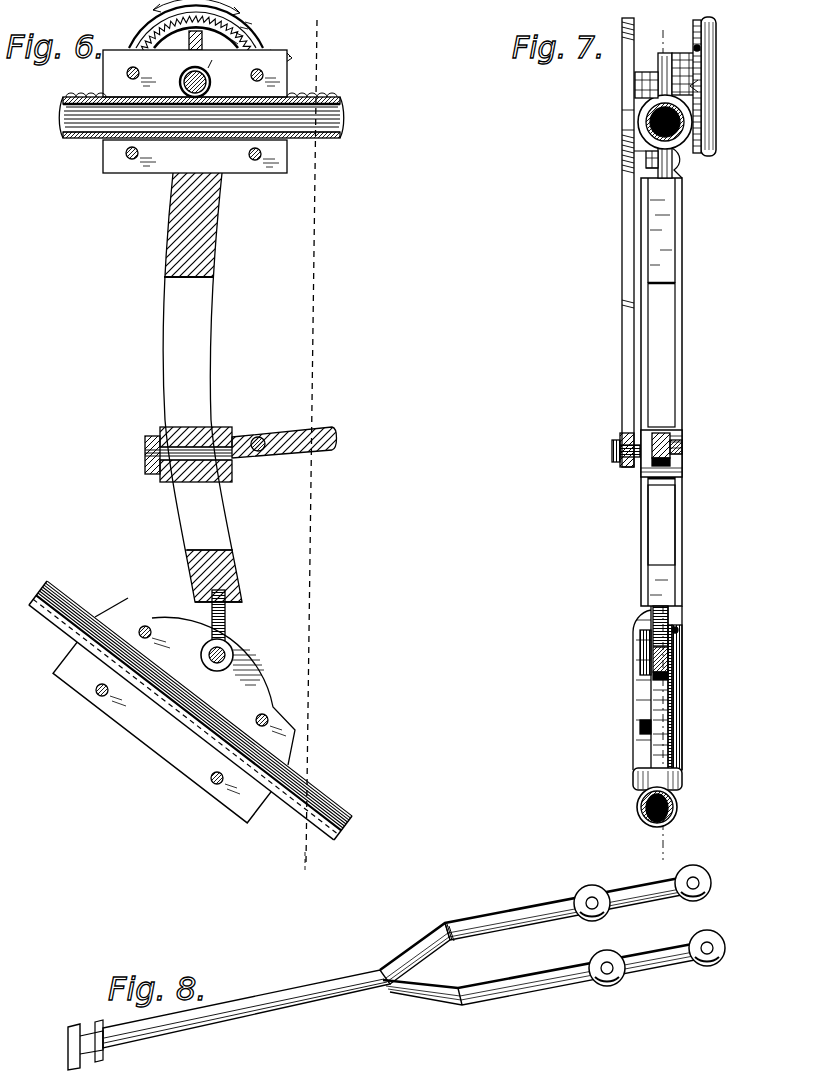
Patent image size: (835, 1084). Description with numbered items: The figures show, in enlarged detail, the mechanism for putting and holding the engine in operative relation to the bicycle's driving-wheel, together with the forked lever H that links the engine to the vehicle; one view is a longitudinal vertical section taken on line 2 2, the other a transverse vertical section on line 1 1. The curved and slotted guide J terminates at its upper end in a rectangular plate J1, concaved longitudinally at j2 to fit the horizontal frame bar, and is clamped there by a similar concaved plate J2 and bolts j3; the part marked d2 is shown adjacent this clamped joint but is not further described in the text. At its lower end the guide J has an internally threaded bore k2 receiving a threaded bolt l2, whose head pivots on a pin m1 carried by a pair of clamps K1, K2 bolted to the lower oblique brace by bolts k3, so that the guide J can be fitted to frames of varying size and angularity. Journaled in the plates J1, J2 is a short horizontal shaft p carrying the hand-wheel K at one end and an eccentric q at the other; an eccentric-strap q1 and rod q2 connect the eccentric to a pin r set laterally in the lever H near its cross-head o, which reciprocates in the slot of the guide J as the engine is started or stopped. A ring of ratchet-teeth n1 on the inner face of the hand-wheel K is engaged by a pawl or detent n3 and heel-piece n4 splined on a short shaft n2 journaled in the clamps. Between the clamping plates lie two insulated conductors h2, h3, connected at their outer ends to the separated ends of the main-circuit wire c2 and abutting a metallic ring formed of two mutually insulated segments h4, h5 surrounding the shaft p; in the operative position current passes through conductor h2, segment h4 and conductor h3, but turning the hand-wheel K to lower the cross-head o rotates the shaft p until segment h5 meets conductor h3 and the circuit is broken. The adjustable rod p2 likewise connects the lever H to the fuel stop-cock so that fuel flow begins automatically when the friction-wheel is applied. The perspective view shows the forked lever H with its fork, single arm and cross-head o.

In FIG. 6, the section line 1 1 is at (307, 458).
In FIG. 8, the section line 1 1 is at (303, 874).
In FIG. 7, the section line 2 2 is at (655, 454).
In FIG. 8, the section line 2 2 is at (653, 861).
In FIG. 6, the hand-wheel K is at (242, 30).
In FIG. 7, the hand-wheel K is at (716, 62).
In FIG. 6, the clamp K1 is at (195, 681).
In FIG. 7, the clamp K1 is at (682, 695).
In FIG. 7, the clamp K2 is at (640, 692).
In FIG. 6, the ratchet-teeth n1 is at (152, 44).
In FIG. 7, the ratchet-teeth n1 is at (701, 108).
In FIG. 6, the short shaft n2 is at (283, 66).
In FIG. 7, the short shaft n2 is at (688, 53).
In FIG. 6, the pawl or detent n3 is at (292, 38).
In FIG. 7, the pawl or detent n3 is at (701, 46).
In FIG. 6, the heel-piece n4 is at (292, 56).
In FIG. 7, the heel-piece n4 is at (701, 76).
In FIG. 6, the horizontal shaft p is at (212, 80).
In FIG. 7, the adjustable rod p2 is at (650, 78).
In FIG. 6, the insulated metallic conductor h2 is at (160, 82).
In FIG. 6, the insulated metallic conductor h3 is at (252, 88).
In FIG. 7, the insulated metallic conductor h3 is at (640, 100).
In FIG. 6, the ring segment h4 is at (190, 70).
In FIG. 6, the ring segment h5 is at (216, 54).
In FIG. 6, the main-circuit wire c2 is at (330, 98).
In FIG. 6, the lower strip d2 is at (304, 140).
In FIG. 6, the curved and slotted guide J is at (180, 315).
In FIG. 7, the curved and slotted guide J is at (683, 343).
In FIG. 6, the rectangular plate J1 is at (195, 156).
In FIG. 7, the rectangular plate J1 is at (684, 168).
In FIG. 7, the longitudinally-concaved plate J2 is at (646, 158).
In FIG. 7, the longitudinal concavity j2 is at (692, 127).
In FIG. 6, the bolts j3 is at (260, 186).
In FIG. 7, the bolts j3 is at (646, 162).
In FIG. 7, the eccentric q is at (622, 96).
In FIG. 7, the eccentric-strap q1 is at (622, 118).
In FIG. 7, the rod q2 is at (622, 274).
In FIG. 6, the cross-head o is at (225, 428).
In FIG. 7, the cross-head o is at (682, 432).
In FIG. 8, the cross-head o is at (100, 1036).
In FIG. 6, the pin r is at (253, 455).
In FIG. 7, the pin r is at (612, 450).
In FIG. 6, the forked lever H is at (290, 448).
In FIG. 7, the forked lever H is at (682, 448).
In FIG. 8, the forked lever H is at (472, 925).
In FIG. 6, the internally threaded bore k2 is at (200, 566).
In FIG. 6, the bolts k3 is at (210, 798).
In FIG. 7, the bolts k3 is at (640, 738).
In FIG. 6, the threaded bolt l2 is at (228, 616).
In FIG. 7, the threaded bolt l2 is at (650, 620).
In FIG. 6, the pin m1 is at (233, 655).
In FIG. 7, the pin m1 is at (682, 662).